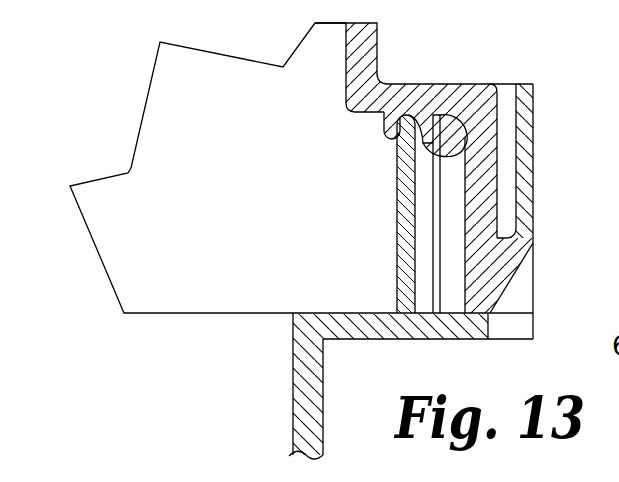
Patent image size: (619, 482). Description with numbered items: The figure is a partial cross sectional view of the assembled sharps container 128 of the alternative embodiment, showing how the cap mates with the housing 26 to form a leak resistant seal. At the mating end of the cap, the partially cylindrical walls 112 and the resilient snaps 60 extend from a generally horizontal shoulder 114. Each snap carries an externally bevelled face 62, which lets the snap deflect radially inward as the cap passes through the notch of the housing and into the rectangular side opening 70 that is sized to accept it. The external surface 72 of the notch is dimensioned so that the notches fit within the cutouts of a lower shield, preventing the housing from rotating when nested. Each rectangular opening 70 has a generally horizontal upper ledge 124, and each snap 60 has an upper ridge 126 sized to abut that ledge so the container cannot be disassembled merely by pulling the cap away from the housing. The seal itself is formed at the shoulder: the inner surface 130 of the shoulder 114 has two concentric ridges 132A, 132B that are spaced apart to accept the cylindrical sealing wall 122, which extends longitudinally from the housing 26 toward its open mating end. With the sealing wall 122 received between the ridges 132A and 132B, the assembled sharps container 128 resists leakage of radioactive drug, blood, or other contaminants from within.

The housing 26 is at (343, 353).
The resilient snaps 60 is at (508, 300).
The externally bevelled face 62 is at (522, 277).
The rectangular side opening 70 is at (510, 321).
The external surface of notch 72 is at (533, 140).
The partially cylindrical walls 112 is at (453, 133).
The shoulder 114 is at (402, 82).
The cylindrical sealing wall 122 is at (397, 224).
The upper ledge 124 is at (523, 237).
The upper ridge 126 is at (525, 203).
The sharps container 128 is at (248, 338).
The inner surface of shoulder 130 is at (374, 113).
The concentric ridge 132A is at (392, 146).
The concentric ridge 132B is at (430, 152).